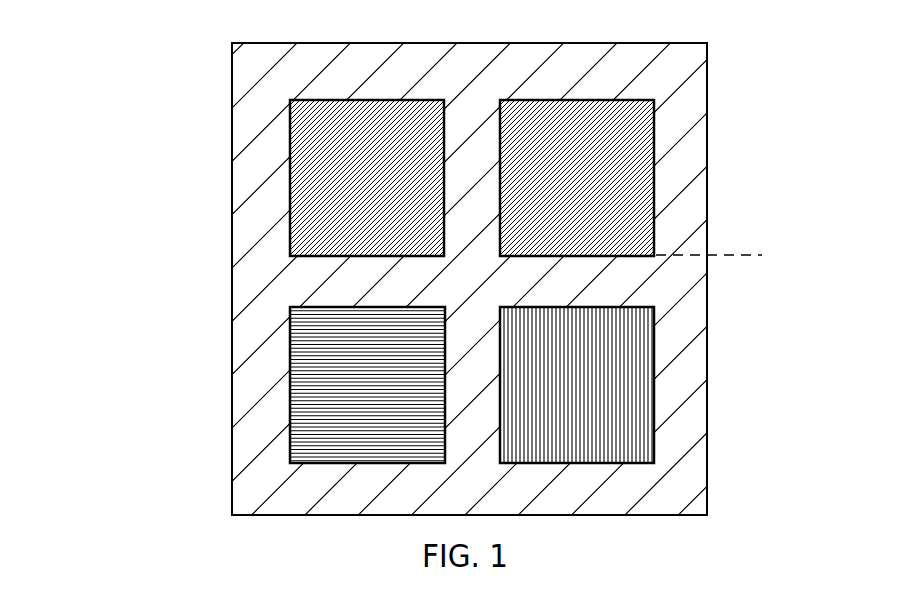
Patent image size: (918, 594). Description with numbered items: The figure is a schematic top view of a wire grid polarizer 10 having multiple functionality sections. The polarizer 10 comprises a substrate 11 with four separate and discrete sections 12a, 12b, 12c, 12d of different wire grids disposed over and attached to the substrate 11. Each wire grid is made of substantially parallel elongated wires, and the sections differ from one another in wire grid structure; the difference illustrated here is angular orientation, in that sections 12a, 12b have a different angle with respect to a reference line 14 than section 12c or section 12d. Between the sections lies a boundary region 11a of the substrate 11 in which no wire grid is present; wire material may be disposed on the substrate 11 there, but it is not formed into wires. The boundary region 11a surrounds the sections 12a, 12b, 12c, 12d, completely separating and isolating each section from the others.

The wire grid polarizer 10 is at (90, 108).
The substrate 11 is at (252, 188).
The boundary region 11a is at (383, 283).
The section 12a is at (348, 118).
The section 12b is at (599, 117).
The section 12c is at (312, 386).
The section 12d is at (618, 386).
The reference line 14 is at (723, 255).